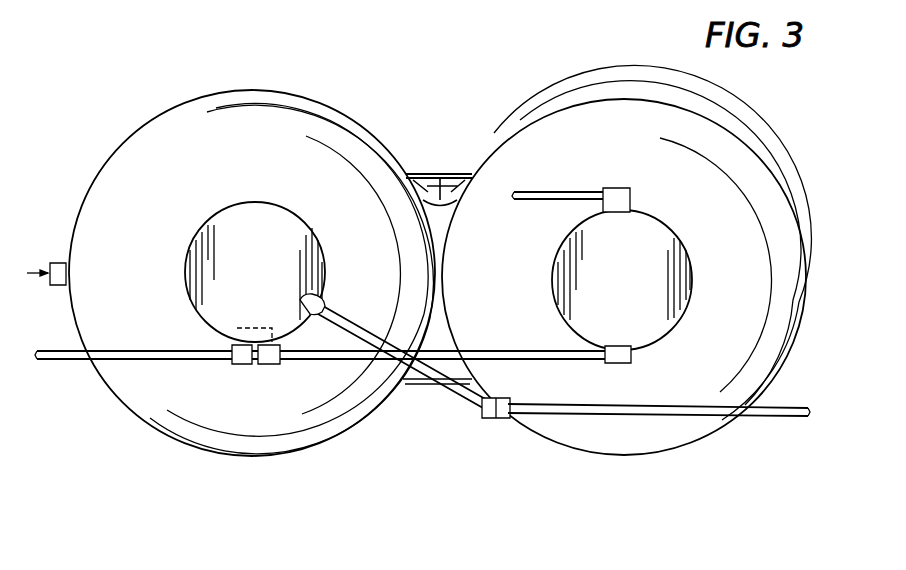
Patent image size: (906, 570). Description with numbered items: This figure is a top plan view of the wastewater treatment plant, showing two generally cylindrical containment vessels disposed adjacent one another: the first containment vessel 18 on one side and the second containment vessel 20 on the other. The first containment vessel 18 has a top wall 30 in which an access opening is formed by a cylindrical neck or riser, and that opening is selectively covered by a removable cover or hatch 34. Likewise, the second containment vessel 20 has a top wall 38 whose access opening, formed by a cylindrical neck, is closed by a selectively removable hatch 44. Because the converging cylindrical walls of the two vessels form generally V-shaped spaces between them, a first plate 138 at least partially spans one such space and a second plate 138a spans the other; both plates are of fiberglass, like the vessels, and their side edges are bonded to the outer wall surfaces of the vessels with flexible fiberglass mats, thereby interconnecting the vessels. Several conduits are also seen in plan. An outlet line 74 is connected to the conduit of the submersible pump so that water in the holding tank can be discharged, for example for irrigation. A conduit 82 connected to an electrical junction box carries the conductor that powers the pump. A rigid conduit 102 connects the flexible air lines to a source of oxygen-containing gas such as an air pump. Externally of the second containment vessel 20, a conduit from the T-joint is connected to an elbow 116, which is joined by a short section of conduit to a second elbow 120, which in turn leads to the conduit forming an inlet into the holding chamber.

The first containment vessel 18 is at (174, 456).
The second containment vessel 20 is at (757, 149).
The top wall 30 is at (142, 172).
The removable cover or hatch 34 is at (250, 232).
The top wall 38 is at (610, 122).
The selectively removable hatch 44 is at (670, 252).
The outlet line 74 is at (468, 404).
The conduit 82 is at (113, 361).
The rigid conduit 102 is at (547, 194).
The elbow 116 is at (458, 173).
The second elbow 120 is at (433, 173).
The first plate 138 is at (418, 388).
The second plate 138a is at (411, 173).